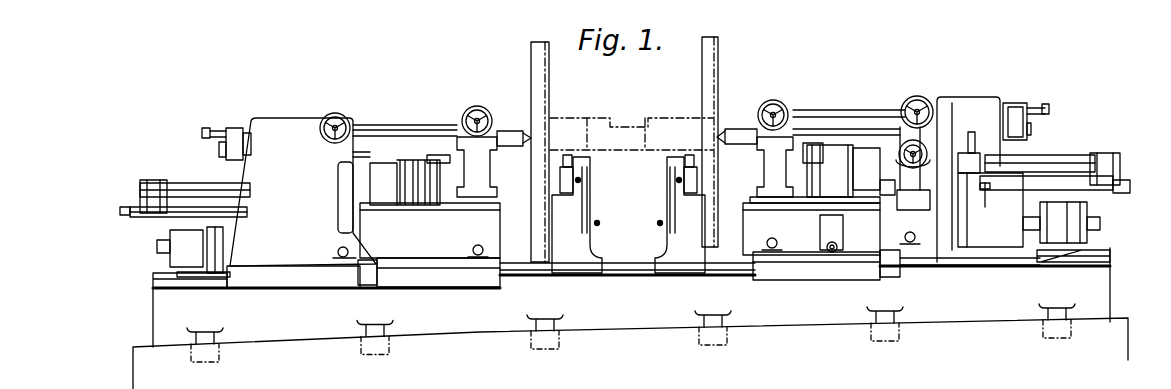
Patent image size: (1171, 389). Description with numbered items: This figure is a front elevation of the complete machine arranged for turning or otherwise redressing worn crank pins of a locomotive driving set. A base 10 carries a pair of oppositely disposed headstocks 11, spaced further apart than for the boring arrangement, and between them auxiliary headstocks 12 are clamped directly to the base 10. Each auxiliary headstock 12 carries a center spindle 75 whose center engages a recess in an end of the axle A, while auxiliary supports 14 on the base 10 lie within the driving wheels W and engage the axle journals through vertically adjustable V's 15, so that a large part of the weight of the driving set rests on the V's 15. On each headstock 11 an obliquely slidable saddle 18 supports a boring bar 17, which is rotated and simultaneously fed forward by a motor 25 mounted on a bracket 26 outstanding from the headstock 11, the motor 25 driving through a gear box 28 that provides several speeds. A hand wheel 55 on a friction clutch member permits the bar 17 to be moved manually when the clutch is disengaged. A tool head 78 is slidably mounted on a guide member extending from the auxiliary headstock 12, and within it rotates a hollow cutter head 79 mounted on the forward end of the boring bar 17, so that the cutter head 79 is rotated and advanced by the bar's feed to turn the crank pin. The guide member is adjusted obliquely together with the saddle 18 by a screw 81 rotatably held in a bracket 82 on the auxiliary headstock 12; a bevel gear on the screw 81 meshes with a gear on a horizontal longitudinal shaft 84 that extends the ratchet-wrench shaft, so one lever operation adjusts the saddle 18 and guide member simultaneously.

The base 10 is at (475, 316).
The headstock 11 is at (285, 137).
The auxiliary headstock 12 is at (462, 140).
The auxiliary support 14 is at (676, 262).
The V 15 is at (566, 157).
The boring bar 17 is at (197, 190).
The saddle 18 is at (1127, 193).
The motor 25 is at (172, 233).
The bracket 26 is at (180, 273).
The gear box 28 is at (985, 227).
The hand wheel 55 is at (924, 163).
The center spindle 75 is at (508, 131).
The tool head 78 is at (417, 193).
The hollow cutter head 79 is at (390, 189).
The screw 81 is at (830, 205).
The bracket 82 is at (845, 253).
The longitudinal shaft 84 is at (897, 180).
The axle A is at (625, 120).
The wheel W is at (531, 55).